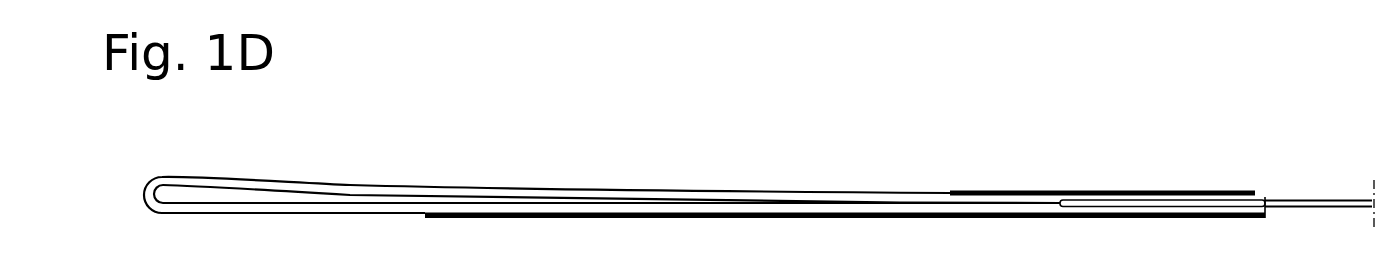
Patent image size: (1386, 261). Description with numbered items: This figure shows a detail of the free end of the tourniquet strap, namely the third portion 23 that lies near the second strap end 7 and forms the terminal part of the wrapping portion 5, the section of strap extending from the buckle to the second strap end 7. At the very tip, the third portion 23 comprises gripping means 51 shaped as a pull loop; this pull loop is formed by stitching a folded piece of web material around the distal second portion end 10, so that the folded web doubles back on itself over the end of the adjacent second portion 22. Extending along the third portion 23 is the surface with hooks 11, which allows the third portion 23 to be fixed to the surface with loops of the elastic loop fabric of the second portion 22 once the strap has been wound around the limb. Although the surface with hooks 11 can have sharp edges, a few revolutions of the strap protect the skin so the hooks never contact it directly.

The wrapping portion 5 is at (924, 157).
The second strap end 7 is at (121, 187).
The distal second portion end 10 is at (1118, 206).
The surface with hooks 11 is at (504, 220).
The second portion 22 is at (1312, 205).
The third portion 23 is at (764, 198).
The gripping means 51 is at (176, 183).